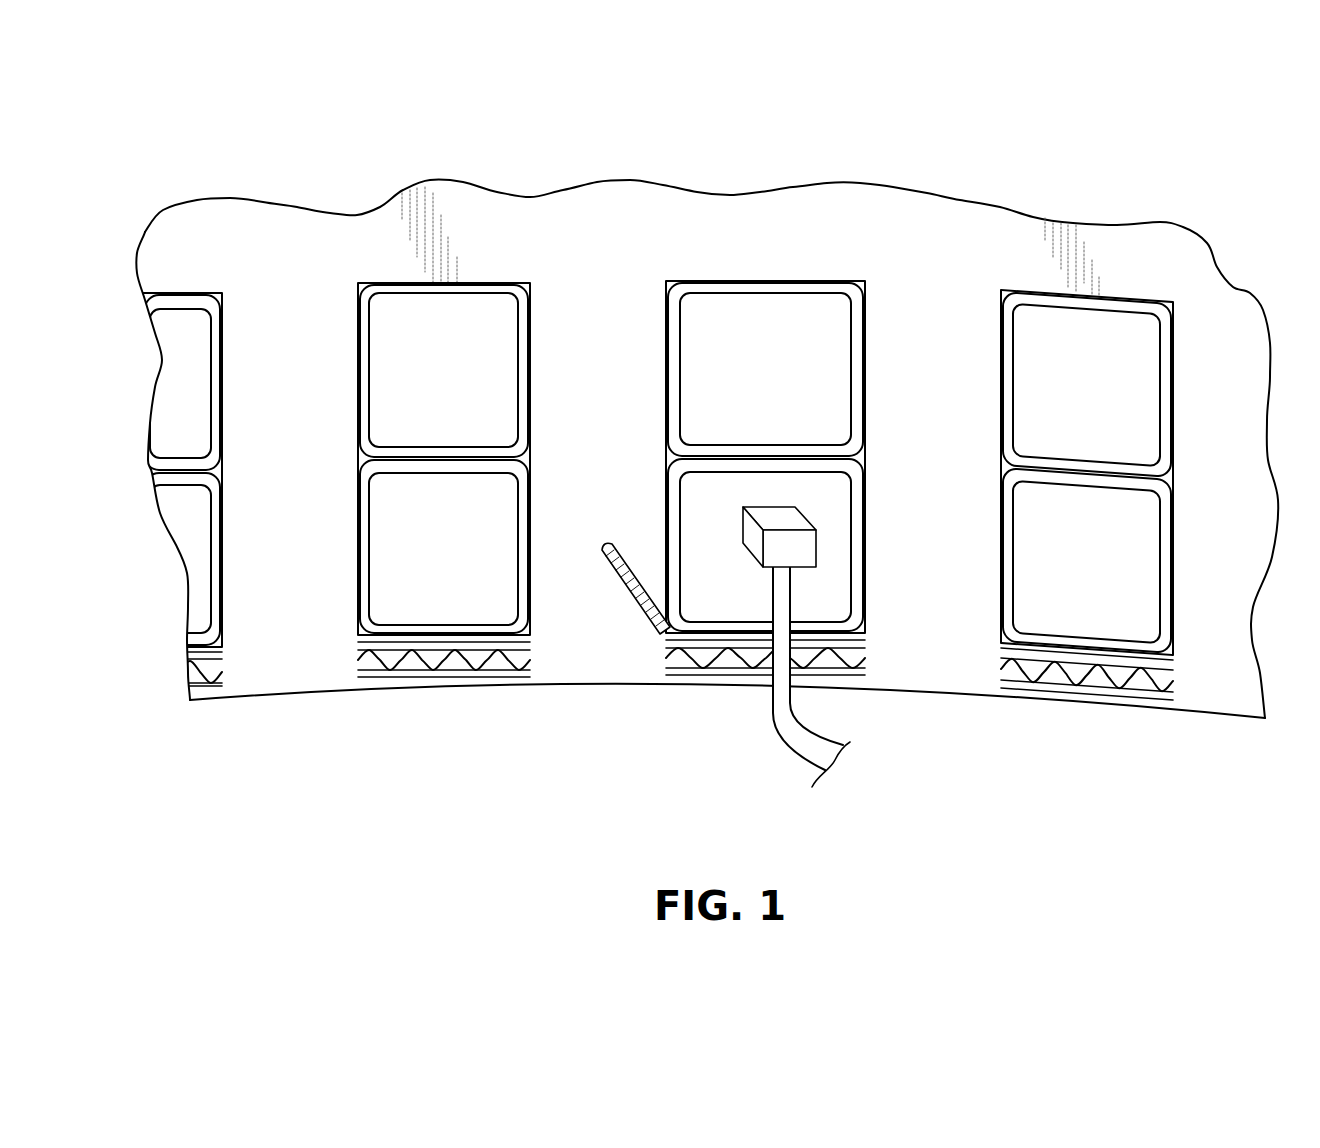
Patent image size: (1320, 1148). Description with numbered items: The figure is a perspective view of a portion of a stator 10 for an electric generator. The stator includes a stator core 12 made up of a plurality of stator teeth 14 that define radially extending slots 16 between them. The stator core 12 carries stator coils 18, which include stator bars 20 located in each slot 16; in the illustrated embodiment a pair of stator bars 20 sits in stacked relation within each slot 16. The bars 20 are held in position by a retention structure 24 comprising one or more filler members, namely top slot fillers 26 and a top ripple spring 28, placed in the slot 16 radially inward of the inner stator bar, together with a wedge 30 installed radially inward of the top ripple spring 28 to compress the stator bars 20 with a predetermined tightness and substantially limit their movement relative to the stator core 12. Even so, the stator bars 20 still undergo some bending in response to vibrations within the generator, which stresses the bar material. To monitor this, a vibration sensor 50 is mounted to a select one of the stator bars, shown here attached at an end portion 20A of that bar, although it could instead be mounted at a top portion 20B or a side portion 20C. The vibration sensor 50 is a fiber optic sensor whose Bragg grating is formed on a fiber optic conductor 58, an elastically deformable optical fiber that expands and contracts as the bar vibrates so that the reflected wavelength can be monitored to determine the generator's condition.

The stator 10 is at (305, 148).
The stator core 12 is at (826, 208).
The stator teeth 14 is at (288, 677).
The slots 16 is at (218, 357).
The stator coils 18 is at (497, 275).
The stator bars 20 is at (166, 410).
The end portion 20A is at (832, 535).
The top portion 20B is at (763, 456).
The side portion 20C is at (640, 548).
The retention structure 24 is at (370, 705).
The top slot fillers 26 is at (370, 647).
The top ripple spring 28 is at (482, 665).
The wedge 30 is at (425, 680).
The vibration sensor 50 is at (740, 560).
The fiber optic conductor 58 is at (807, 750).